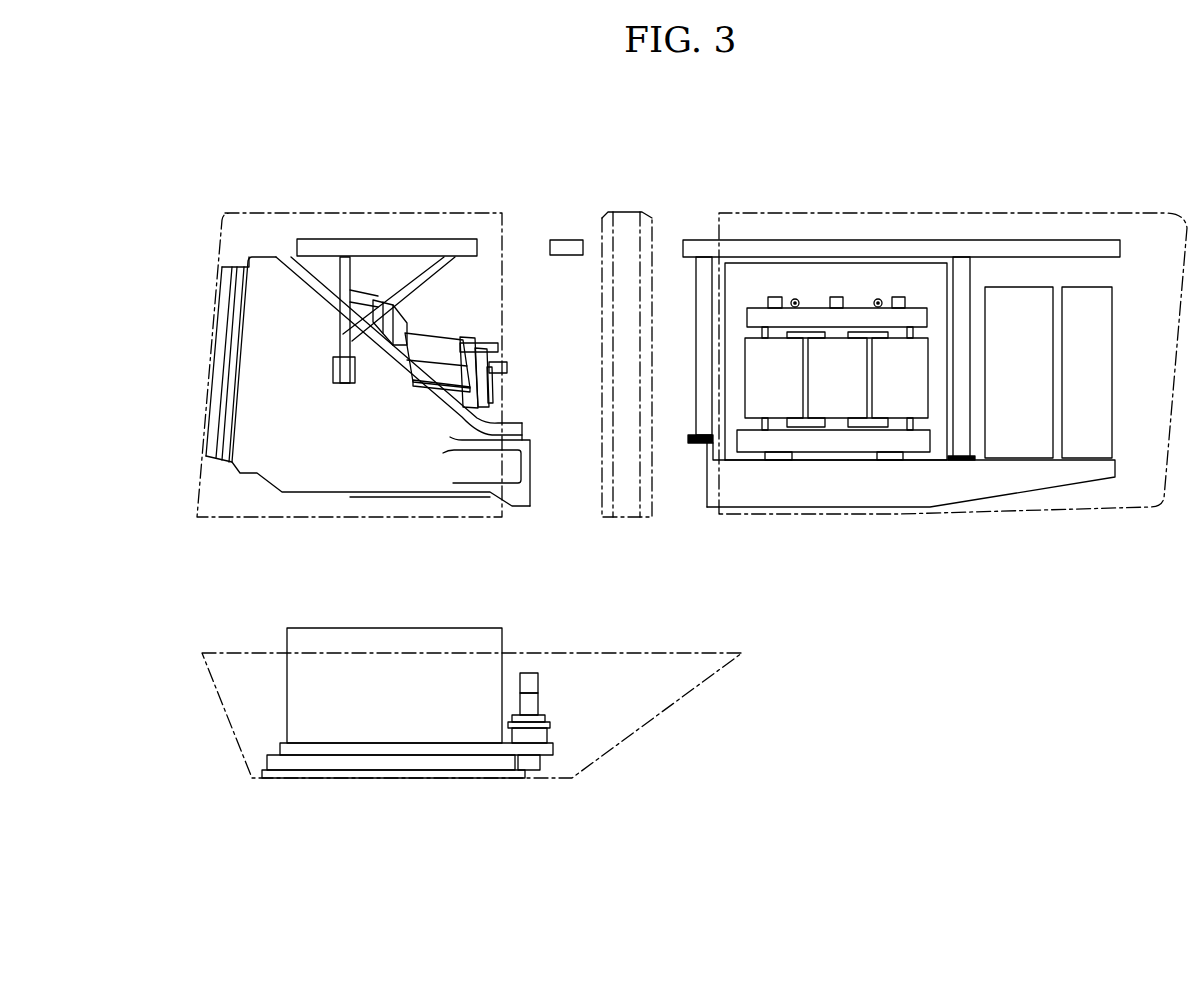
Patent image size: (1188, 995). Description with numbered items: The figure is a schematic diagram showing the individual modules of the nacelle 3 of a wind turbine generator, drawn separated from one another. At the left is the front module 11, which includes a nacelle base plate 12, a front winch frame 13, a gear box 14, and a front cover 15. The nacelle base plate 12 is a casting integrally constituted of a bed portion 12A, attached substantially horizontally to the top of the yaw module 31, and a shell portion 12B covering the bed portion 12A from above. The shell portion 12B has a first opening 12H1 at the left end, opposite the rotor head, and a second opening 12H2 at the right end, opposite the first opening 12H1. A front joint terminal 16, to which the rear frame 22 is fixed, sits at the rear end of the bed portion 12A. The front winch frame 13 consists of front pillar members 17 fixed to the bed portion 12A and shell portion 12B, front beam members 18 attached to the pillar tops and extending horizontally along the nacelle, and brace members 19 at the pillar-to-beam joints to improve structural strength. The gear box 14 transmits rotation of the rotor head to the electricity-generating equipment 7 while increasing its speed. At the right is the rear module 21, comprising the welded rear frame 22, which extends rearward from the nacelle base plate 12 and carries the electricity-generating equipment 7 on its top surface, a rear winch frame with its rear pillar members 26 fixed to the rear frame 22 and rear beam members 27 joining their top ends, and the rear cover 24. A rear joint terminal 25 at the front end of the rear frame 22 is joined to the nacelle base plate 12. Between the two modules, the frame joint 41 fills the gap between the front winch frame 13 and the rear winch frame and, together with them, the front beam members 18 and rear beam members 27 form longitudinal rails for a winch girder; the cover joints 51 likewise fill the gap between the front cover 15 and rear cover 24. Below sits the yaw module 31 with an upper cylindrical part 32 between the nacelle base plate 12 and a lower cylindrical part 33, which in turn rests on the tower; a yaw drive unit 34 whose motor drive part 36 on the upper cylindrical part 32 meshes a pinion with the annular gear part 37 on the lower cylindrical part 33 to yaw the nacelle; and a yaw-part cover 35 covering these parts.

The nacelle 3 is at (160, 182).
The front module 11 is at (279, 199).
The nacelle base plate 12 is at (320, 423).
The bed portion 12A is at (418, 493).
The shell portion 12B is at (303, 443).
The first opening 12H1 is at (215, 353).
The second opening 12H2 is at (427, 332).
The front winch frame 13 is at (366, 226).
The gear box 14 is at (497, 389).
The front cover 15 is at (462, 212).
The front joint terminal 16 is at (530, 487).
The front pillar members 17 is at (340, 343).
The front beam members 18 is at (410, 247).
The brace members 19 is at (377, 342).
The rear module 21 is at (932, 355).
The rear frame 22 is at (887, 507).
The rear cover 24 is at (1148, 213).
The rear joint terminal 25 is at (702, 487).
The rear pillar members 26 is at (705, 383).
The rear beam members 27 is at (923, 248).
The electricity-generating equipment 7 is at (838, 410).
The yaw module 31 is at (468, 741).
The upper cylindrical part 32 is at (295, 680).
The lower cylindrical part 33 is at (392, 778).
The yaw drive unit 34 is at (556, 683).
The yaw-part cover 35 is at (690, 700).
The drive part 36 is at (540, 705).
The gear part 37 is at (270, 758).
The frame joint 41 is at (568, 240).
The cover joints 51 is at (627, 212).